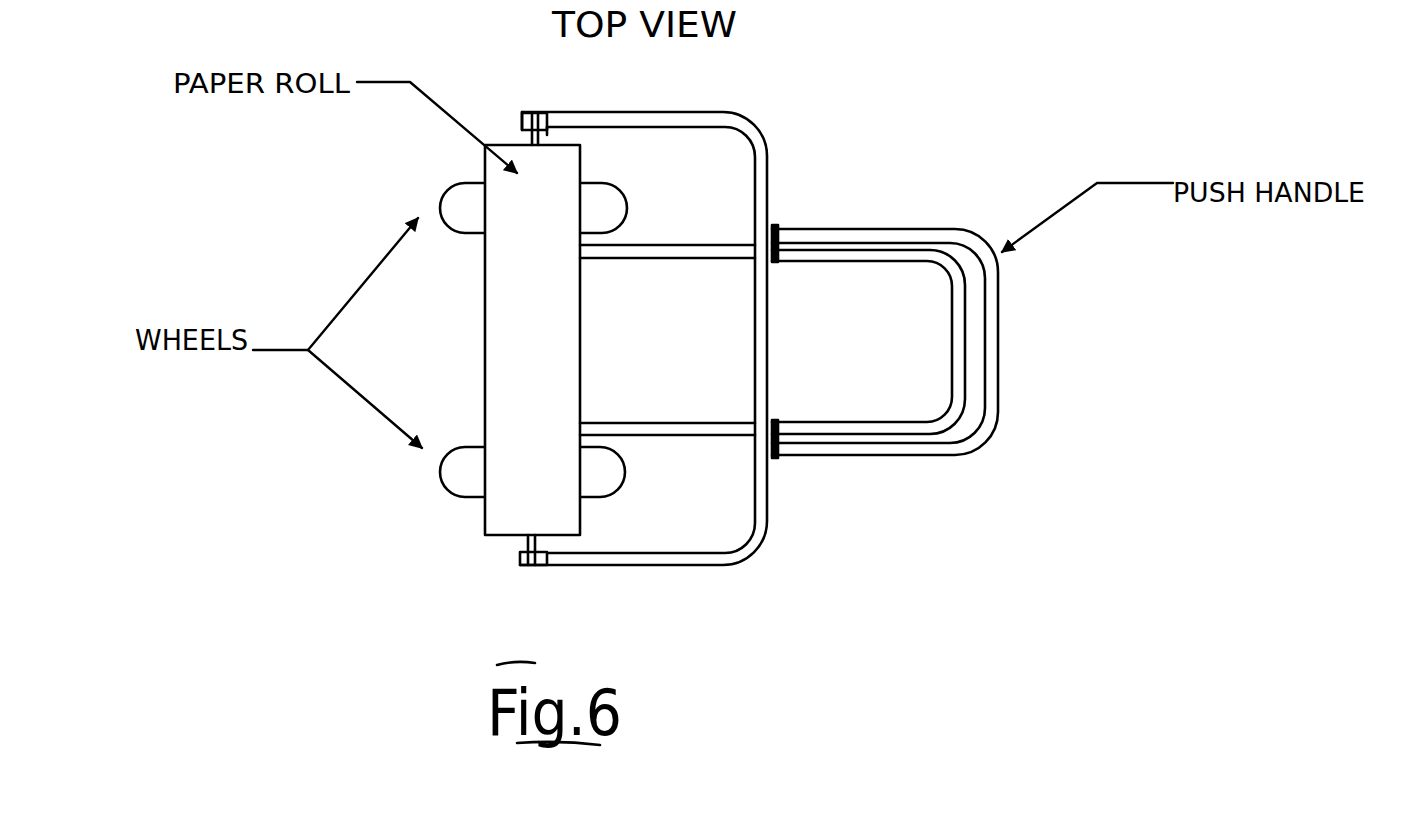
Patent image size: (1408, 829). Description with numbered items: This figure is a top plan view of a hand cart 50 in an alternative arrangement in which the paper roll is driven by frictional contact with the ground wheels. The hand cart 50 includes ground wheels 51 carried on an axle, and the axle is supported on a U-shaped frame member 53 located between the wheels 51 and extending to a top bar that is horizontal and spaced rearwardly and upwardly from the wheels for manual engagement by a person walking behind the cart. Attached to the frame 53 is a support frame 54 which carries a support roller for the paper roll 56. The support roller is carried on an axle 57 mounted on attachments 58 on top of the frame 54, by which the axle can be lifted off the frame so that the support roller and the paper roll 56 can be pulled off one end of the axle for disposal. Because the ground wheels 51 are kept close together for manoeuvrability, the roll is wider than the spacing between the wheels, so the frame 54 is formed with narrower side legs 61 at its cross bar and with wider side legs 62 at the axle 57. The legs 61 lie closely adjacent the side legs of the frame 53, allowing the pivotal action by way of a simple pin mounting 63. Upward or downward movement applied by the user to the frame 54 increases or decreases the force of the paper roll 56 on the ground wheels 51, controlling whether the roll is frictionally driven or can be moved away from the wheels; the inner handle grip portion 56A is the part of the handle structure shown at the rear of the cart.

The hand cart 50 is at (803, 137).
The ground wheels 51 is at (612, 208).
The U-shaped frame member 53 is at (678, 258).
The support frame 54 is at (818, 453).
The paper roll 56 is at (497, 343).
The push handle grip 56A is at (965, 327).
The axle 57 is at (543, 128).
The attachments 58 is at (527, 113).
The narrower side legs 61 is at (850, 232).
The wider side legs 62 is at (655, 120).
The pin mounting 63 is at (780, 413).